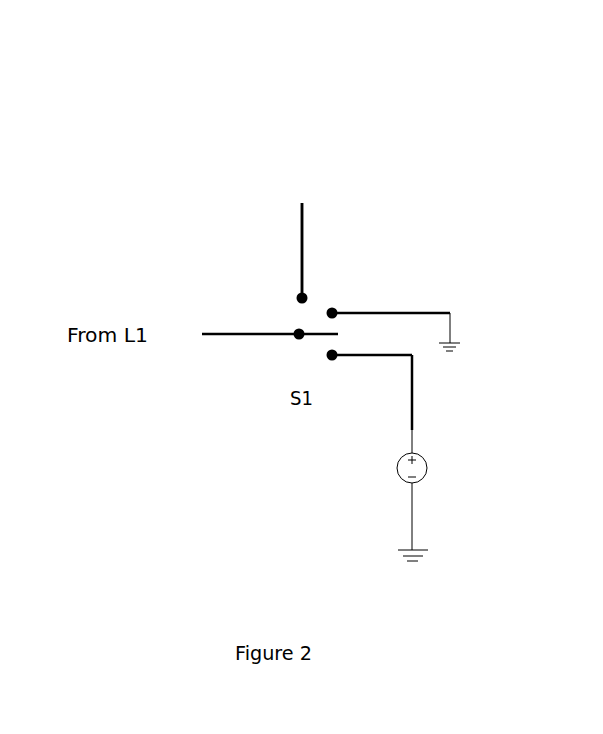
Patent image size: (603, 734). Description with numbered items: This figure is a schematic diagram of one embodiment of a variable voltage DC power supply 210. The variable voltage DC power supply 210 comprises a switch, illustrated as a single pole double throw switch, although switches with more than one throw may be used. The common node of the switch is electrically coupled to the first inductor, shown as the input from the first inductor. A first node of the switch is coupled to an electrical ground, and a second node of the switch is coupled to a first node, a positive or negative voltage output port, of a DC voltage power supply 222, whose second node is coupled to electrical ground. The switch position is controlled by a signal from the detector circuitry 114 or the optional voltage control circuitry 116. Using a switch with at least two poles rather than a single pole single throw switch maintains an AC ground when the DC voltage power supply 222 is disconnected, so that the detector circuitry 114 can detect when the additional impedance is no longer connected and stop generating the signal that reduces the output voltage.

The detector circuitry 114 is at (213, 215).
The voltage control circuitry 116 is at (213, 226).
The variable voltage DC power supply 210 is at (381, 182).
The DC voltage power supply 222 is at (424, 456).